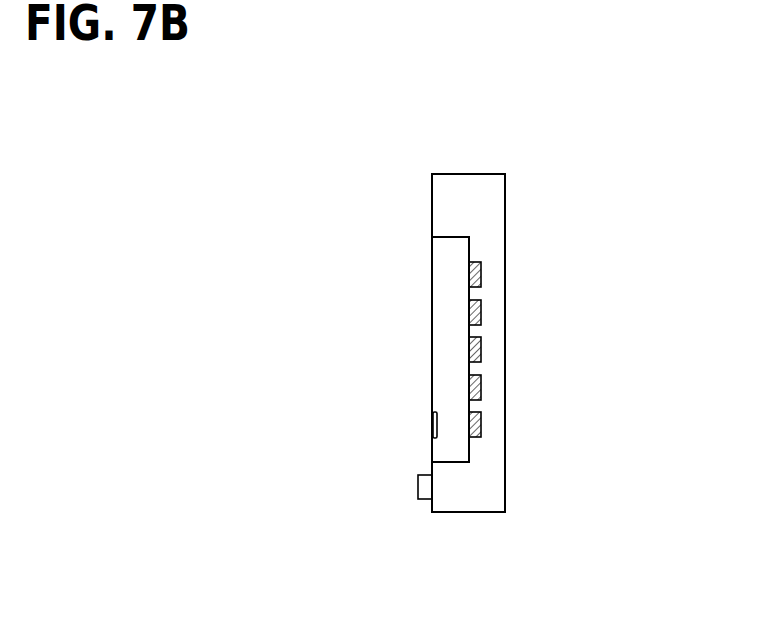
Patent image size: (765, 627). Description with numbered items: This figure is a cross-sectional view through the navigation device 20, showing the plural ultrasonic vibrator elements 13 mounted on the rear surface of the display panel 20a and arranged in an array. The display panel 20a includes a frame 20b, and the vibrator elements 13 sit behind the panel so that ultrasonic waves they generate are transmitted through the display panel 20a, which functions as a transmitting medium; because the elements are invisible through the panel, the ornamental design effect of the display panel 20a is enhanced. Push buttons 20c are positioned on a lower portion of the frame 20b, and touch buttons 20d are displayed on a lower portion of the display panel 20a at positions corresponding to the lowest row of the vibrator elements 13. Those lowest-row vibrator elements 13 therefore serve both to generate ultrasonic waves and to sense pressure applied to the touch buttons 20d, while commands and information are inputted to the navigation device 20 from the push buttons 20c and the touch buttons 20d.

The navigation device 20 is at (517, 148).
The display panel 20a is at (437, 295).
The frame 20b is at (437, 208).
The push buttons 20c is at (418, 490).
The touch buttons 20d is at (432, 424).
The ultrasonic vibrator elements 13 is at (483, 270).